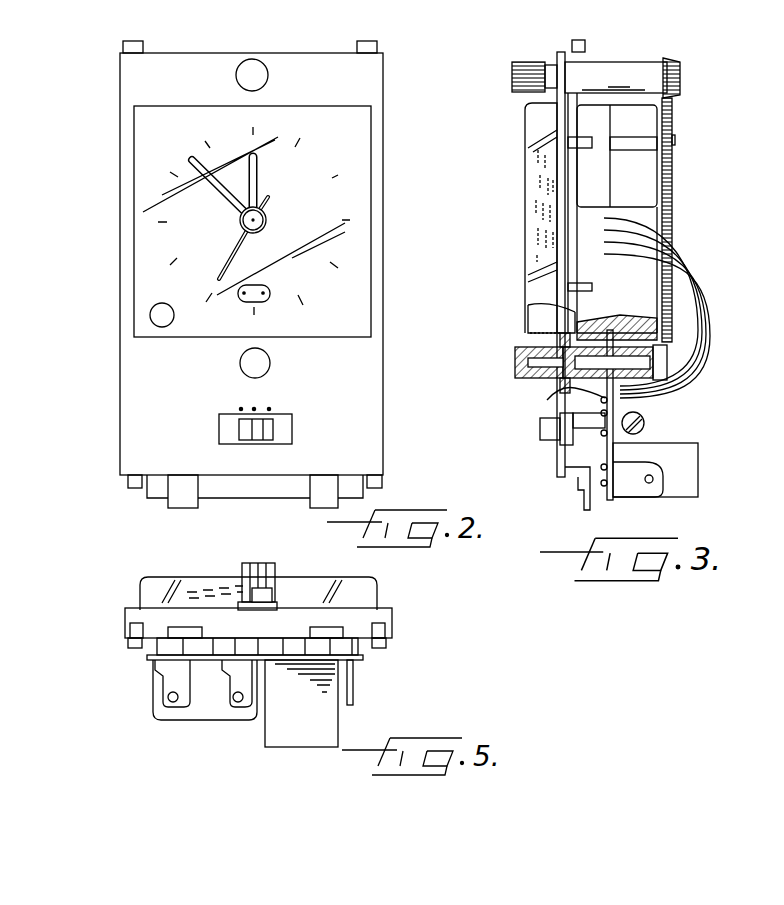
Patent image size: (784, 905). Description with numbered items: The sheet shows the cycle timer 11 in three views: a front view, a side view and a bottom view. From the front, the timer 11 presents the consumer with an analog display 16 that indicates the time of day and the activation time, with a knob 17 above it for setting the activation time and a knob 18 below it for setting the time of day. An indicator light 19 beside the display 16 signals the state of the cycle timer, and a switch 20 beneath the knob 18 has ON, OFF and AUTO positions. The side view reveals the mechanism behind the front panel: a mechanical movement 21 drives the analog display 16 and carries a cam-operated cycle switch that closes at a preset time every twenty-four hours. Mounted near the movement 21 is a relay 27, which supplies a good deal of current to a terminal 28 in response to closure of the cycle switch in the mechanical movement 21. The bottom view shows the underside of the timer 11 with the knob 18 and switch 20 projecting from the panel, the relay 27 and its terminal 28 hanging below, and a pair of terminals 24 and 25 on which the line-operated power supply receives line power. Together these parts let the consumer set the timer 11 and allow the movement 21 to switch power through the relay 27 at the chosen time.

In FIG. 2, the cycle timer 11 is at (108, 58).
In FIG. 3, the cycle timer 11 is at (648, 57).
In FIG. 5, the cycle timer 11 is at (118, 620).
In FIG. 2, the display 16 is at (143, 183).
In FIG. 3, the display 16 is at (532, 183).
In FIG. 5, the display 16 is at (155, 583).
In FIG. 2, the knob 17 is at (240, 60).
In FIG. 3, the knob 17 is at (522, 64).
In FIG. 2, the knob 18 is at (240, 367).
In FIG. 3, the knob 18 is at (517, 348).
In FIG. 5, the knob 18 is at (252, 563).
In FIG. 2, the indicator light 19 is at (150, 317).
In FIG. 2, the switch 20 is at (243, 423).
In FIG. 3, the switch 20 is at (540, 427).
In FIG. 5, the switch 20 is at (275, 590).
In FIG. 3, the mechanical movement 21 is at (642, 193).
In FIG. 5, the terminal 24 is at (237, 702).
In FIG. 5, the terminal 25 is at (167, 677).
In FIG. 3, the relay 27 is at (688, 472).
In FIG. 5, the relay 27 is at (297, 738).
In FIG. 3, the terminal 28 is at (643, 487).
In FIG. 5, the terminal 28 is at (353, 693).